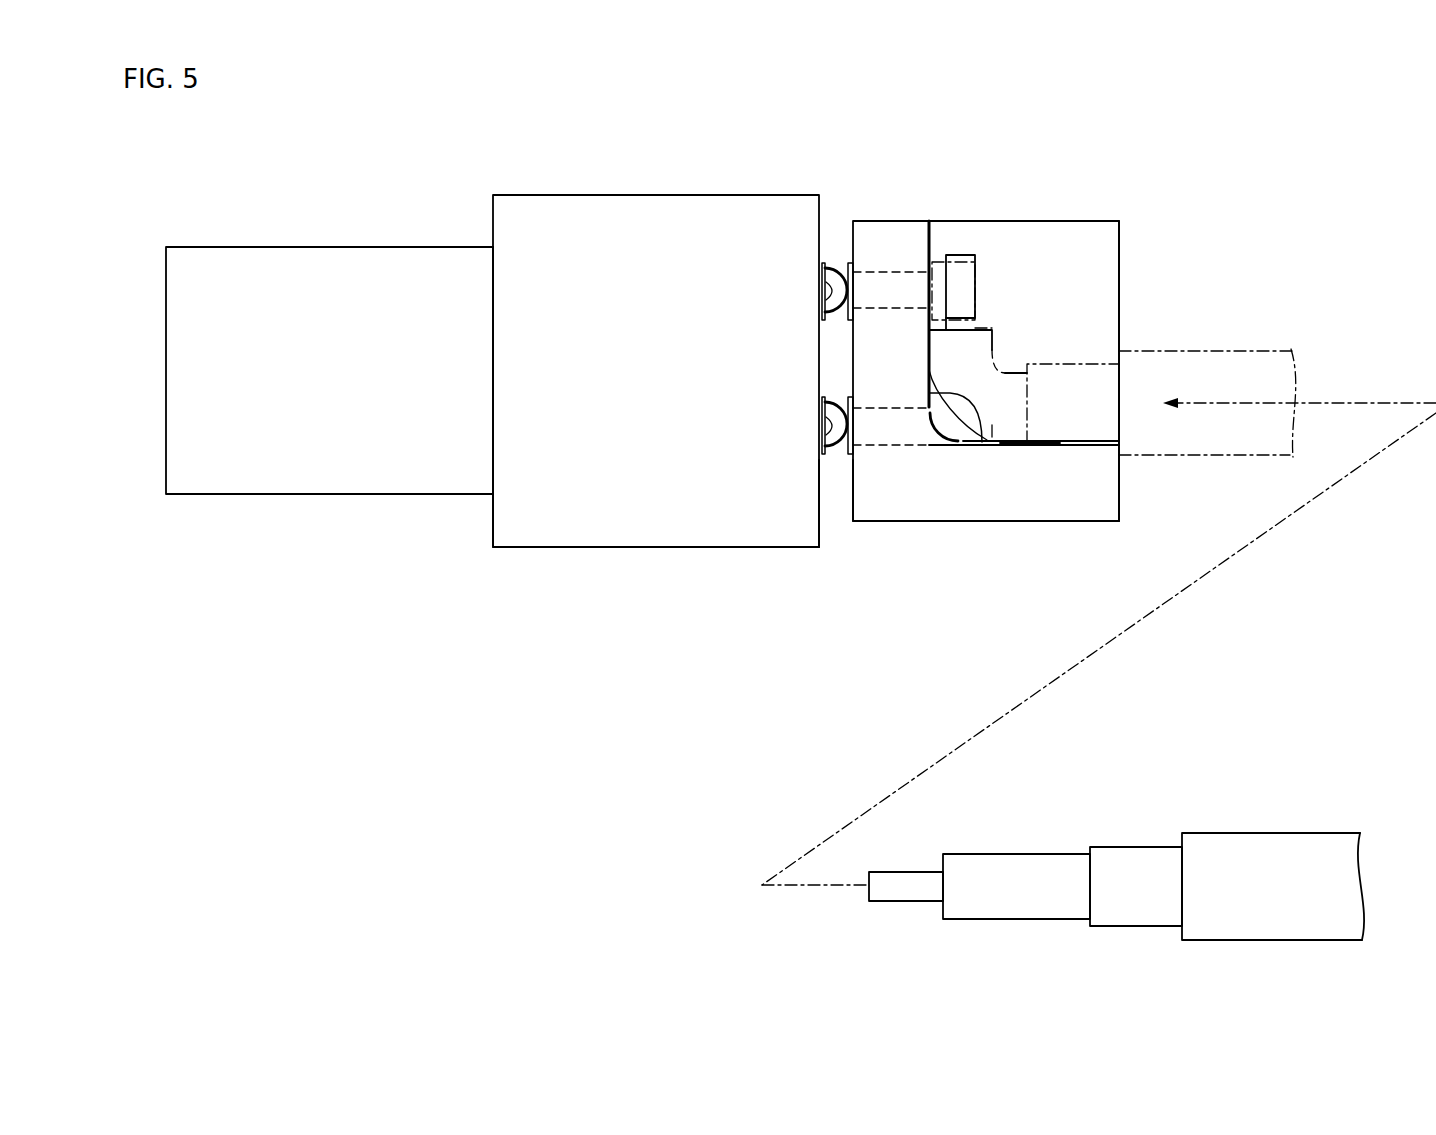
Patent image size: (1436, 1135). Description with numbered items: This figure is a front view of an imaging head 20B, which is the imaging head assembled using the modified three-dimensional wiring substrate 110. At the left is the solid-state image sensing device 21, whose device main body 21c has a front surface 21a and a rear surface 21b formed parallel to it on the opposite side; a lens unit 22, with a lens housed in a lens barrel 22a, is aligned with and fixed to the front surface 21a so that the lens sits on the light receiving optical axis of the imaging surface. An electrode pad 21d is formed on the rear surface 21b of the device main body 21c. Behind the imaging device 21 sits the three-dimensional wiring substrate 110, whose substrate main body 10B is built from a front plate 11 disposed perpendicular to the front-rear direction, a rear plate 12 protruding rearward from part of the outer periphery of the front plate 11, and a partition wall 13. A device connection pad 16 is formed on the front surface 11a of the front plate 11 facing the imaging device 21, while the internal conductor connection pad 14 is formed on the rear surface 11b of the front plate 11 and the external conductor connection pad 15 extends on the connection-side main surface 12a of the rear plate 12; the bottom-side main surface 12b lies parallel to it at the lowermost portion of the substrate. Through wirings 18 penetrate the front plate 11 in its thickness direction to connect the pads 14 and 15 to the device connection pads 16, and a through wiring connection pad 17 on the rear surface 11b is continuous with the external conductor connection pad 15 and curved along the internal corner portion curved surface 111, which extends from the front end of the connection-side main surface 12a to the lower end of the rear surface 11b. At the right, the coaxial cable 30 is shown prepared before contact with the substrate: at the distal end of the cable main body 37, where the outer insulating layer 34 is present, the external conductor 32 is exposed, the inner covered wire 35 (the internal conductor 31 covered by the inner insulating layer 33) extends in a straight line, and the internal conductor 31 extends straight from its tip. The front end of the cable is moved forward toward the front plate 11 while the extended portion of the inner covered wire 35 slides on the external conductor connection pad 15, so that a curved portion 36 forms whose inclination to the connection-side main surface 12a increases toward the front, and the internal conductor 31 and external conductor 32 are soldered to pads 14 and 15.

The substrate main body 10B is at (967, 221).
The front plate 11 is at (878, 237).
The front surface of the front plate 11a is at (852, 502).
The rear surface of the front plate 11b is at (982, 443).
The three-dimensional wiring substrate 110 is at (1100, 210).
The internal corner portion curved surface 111 is at (933, 415).
The rear plate 12 is at (1119, 502).
The connection-side main surface 12a is at (1112, 442).
The bottom-side main surface 12b is at (1057, 521).
The partition wall 13 is at (1119, 293).
The internal conductor connection pad 14 is at (957, 277).
The external conductor connection pad 15 is at (1003, 440).
The device connection pad 16 is at (831, 263).
The through wiring connection pad 17 is at (940, 440).
The through wiring 18 is at (897, 272).
The imaging head 20B is at (487, 558).
The solid-state image sensing device 21 is at (582, 562).
The front surface of the imaging device 21a is at (492, 518).
The rear surface of the imaging device 21b is at (820, 480).
The device main body 21c is at (655, 528).
The electrode pad of the imaging device 21d is at (830, 291).
The lens unit 22 is at (287, 235).
The lens barrel 22a is at (368, 268).
The coaxial cable 30 is at (1262, 340).
The internal conductor 31 is at (963, 325).
The external conductor 32 is at (1073, 363).
The inner insulating layer 33 is at (984, 347).
The outer insulating layer 34 is at (1215, 845).
The inner covered wire 35 is at (992, 425).
The curved portion 36 is at (965, 437).
The cable main body 37 is at (1277, 351).